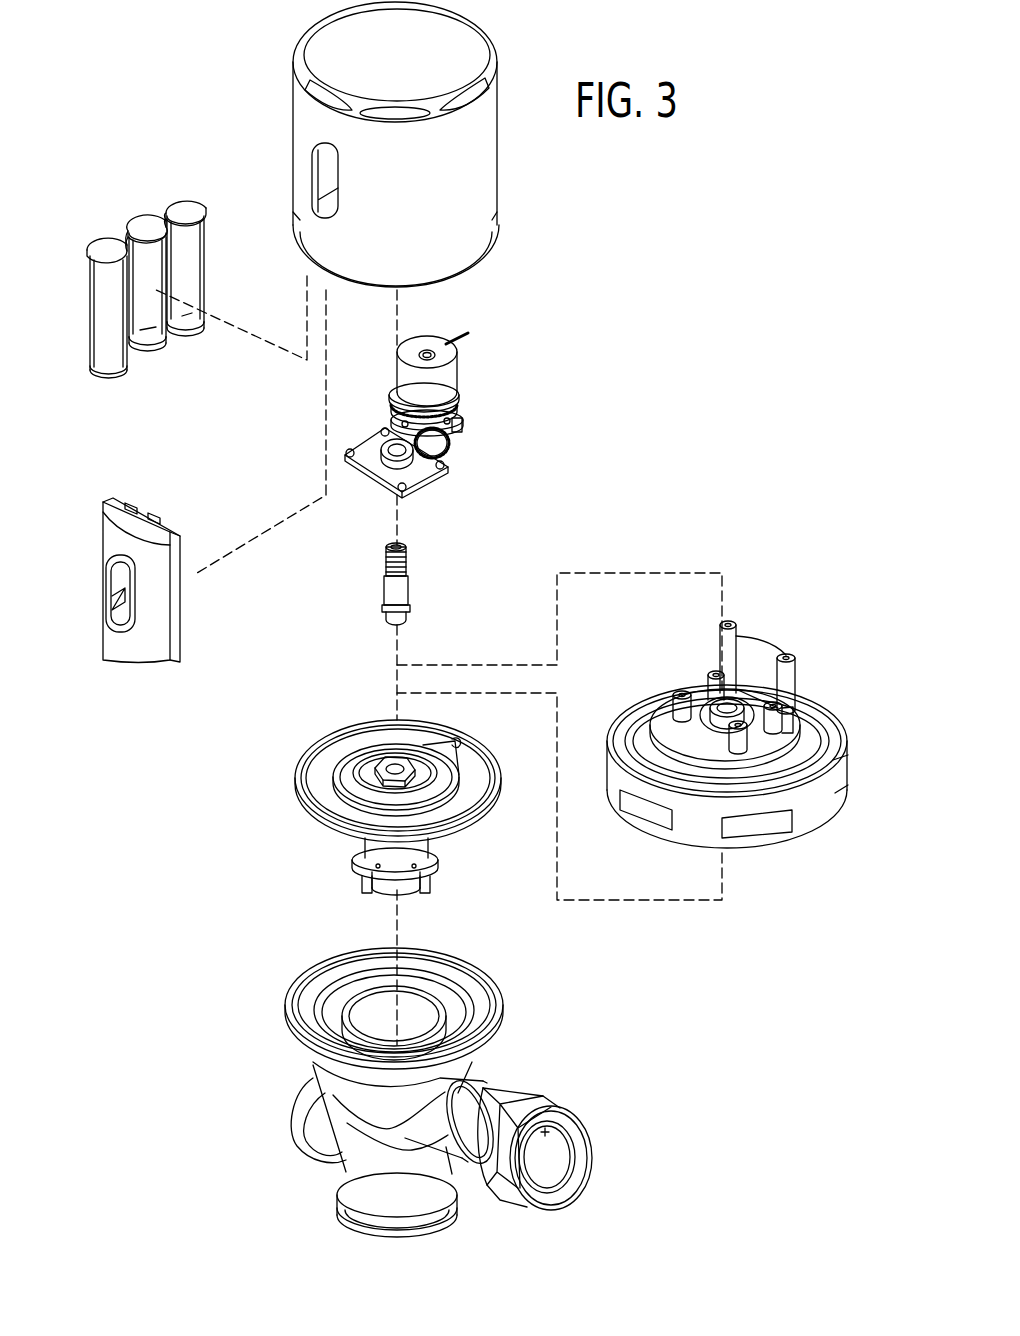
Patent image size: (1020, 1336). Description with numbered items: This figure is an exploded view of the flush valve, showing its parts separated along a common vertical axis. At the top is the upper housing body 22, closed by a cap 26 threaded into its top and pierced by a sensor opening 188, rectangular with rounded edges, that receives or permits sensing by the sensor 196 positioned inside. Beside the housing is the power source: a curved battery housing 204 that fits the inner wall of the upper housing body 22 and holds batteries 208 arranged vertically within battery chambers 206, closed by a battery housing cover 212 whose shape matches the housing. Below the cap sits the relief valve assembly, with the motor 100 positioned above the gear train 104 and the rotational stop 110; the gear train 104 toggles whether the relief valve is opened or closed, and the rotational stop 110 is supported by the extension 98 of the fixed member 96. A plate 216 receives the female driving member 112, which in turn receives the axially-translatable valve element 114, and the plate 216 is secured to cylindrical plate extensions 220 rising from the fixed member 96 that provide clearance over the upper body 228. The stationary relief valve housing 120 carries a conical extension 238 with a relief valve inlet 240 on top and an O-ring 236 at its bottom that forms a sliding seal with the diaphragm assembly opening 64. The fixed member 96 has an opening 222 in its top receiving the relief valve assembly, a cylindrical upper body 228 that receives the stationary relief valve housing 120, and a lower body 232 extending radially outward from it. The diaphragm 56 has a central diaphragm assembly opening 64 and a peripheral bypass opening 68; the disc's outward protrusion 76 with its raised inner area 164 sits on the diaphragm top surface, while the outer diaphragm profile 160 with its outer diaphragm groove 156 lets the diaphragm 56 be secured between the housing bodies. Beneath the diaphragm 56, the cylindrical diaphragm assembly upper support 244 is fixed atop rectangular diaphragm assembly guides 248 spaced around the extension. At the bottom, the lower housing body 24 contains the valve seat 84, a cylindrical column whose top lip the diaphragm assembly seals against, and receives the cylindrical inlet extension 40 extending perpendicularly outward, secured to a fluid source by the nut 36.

The upper housing body 22 is at (382, 144).
The cap 26 is at (417, 62).
The sensor opening 188 is at (330, 173).
The battery housing cover 212 is at (160, 422).
The battery housing 204 is at (127, 373).
The battery chambers 206 is at (187, 318).
The batteries 208 is at (174, 304).
The sensor 196 is at (138, 640).
The motor 100 is at (452, 376).
The gear train 104 is at (489, 378).
The rotational stop 110 is at (462, 440).
The female driving member 112 is at (385, 452).
The axially-translatable valve element 114 is at (431, 472).
The plate 216 is at (422, 470).
The stationary relief valve housing 120 is at (397, 566).
The extension 238 is at (410, 553).
The relief valve inlet 240 is at (397, 545).
The O-ring 236 is at (410, 600).
The diaphragm 56 is at (375, 793).
The diaphragm assembly opening 64 is at (393, 762).
The raised inner area 164 is at (375, 758).
The bypass opening 68 is at (452, 743).
The outer diaphragm groove 156 is at (298, 776).
The outward protrusion 76 is at (437, 787).
The outer diaphragm profile 160 is at (308, 817).
The diaphragm assembly upper support 244 is at (440, 850).
The diaphragm assembly guides 248 is at (425, 888).
The fixed member 96 is at (729, 757).
The extension 98 is at (757, 647).
The plate extensions 220 is at (735, 731).
The opening 222 is at (725, 707).
The upper body 228 is at (655, 752).
The lower body 232 is at (777, 793).
The lower housing body 24 is at (473, 1098).
The valve seat 84 is at (430, 1000).
The nut 36 is at (530, 1108).
The inlet extension 40 is at (470, 1142).